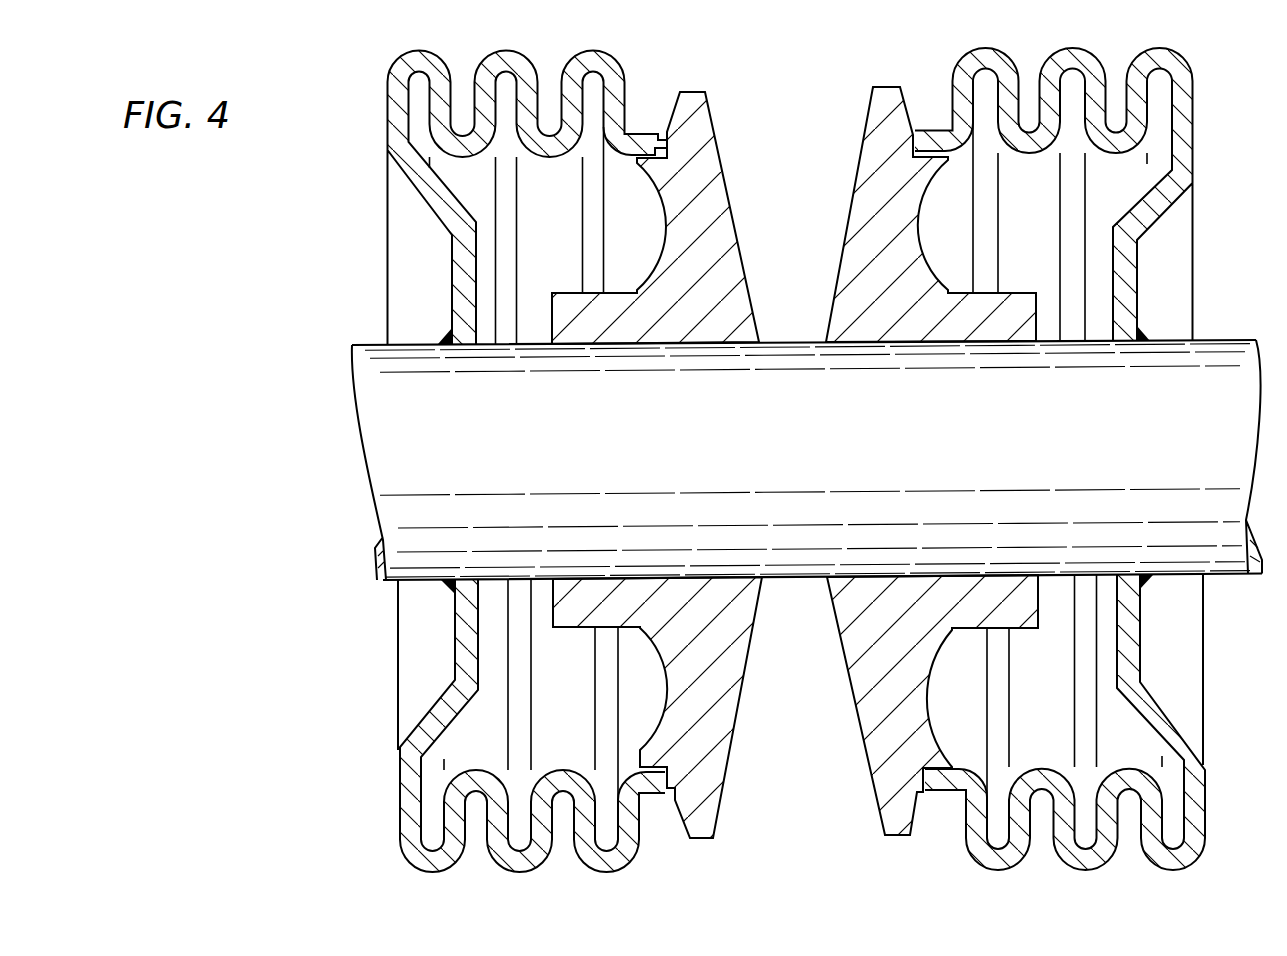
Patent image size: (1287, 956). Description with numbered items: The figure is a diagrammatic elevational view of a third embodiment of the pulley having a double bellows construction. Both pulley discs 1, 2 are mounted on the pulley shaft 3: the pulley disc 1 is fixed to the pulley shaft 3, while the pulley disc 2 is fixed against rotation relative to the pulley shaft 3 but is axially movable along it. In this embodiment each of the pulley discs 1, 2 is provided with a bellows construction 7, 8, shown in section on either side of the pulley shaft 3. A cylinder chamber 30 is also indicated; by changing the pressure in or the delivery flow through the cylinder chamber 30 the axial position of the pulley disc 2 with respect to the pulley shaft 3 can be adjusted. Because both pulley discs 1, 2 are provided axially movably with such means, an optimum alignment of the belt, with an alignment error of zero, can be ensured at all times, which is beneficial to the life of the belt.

The pulley disc 1 is at (687, 92).
The pulley disc 2 is at (878, 88).
The pulley shaft 3 is at (1252, 410).
The bellows construction 7 is at (426, 53).
The bellows construction 8 is at (388, 137).
The cylinder chamber 30 is at (1041, 220).